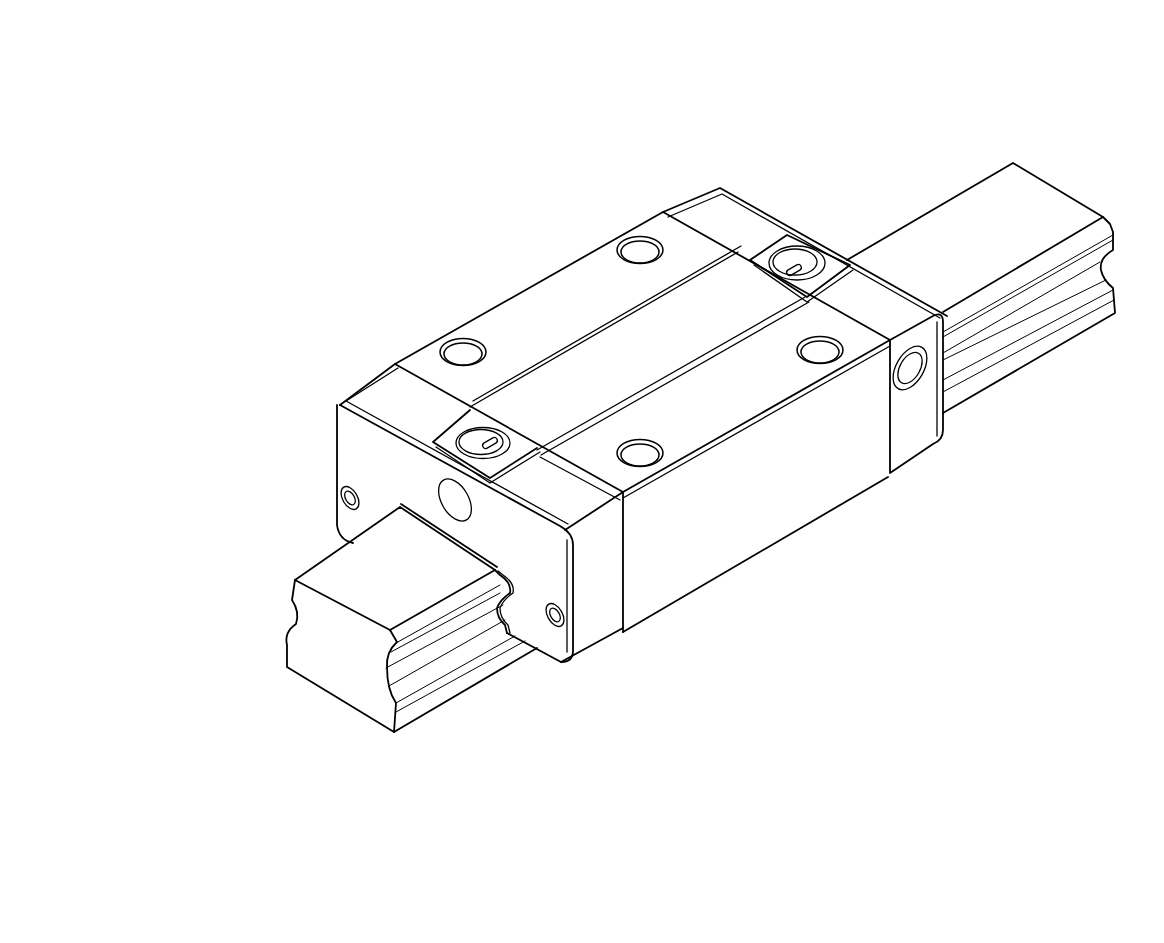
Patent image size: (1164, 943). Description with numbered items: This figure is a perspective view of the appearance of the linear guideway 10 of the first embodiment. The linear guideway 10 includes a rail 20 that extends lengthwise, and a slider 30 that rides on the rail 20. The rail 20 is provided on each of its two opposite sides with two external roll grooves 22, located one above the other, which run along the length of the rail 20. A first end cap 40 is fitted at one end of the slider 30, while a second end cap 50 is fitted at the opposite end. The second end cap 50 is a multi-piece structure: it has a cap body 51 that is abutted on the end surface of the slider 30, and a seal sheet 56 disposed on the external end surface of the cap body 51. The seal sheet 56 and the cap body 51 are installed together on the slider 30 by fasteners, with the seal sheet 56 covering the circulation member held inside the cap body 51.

The linear guideway 10 is at (520, 110).
The rail 20 is at (343, 676).
The external roll grooves 22 is at (290, 603).
The slider 30 is at (766, 541).
The first end cap 40 is at (797, 174).
The second end cap 50 is at (327, 373).
The cap body 51 is at (387, 397).
The seal sheet 56 is at (357, 462).